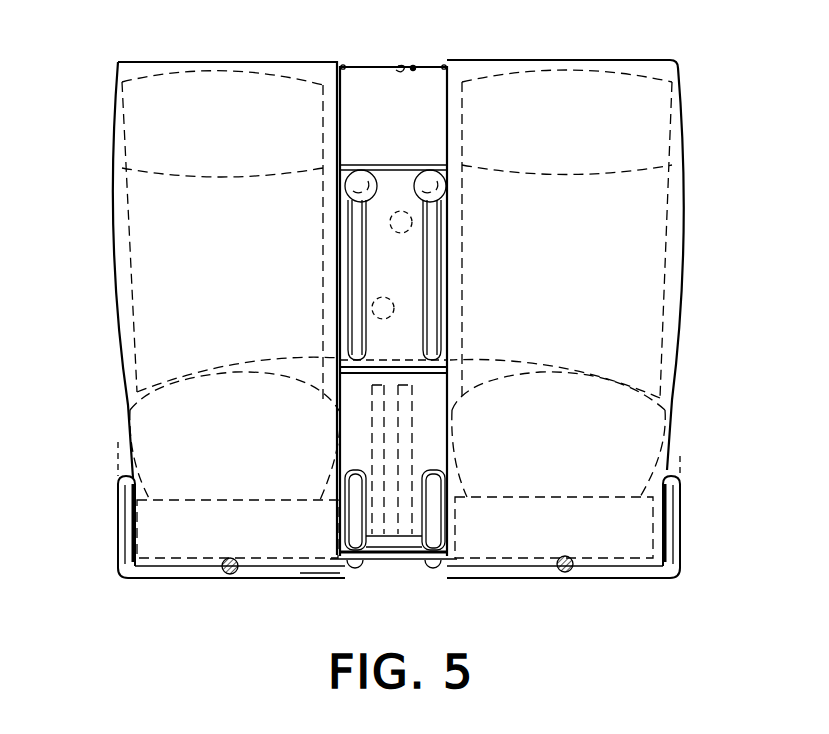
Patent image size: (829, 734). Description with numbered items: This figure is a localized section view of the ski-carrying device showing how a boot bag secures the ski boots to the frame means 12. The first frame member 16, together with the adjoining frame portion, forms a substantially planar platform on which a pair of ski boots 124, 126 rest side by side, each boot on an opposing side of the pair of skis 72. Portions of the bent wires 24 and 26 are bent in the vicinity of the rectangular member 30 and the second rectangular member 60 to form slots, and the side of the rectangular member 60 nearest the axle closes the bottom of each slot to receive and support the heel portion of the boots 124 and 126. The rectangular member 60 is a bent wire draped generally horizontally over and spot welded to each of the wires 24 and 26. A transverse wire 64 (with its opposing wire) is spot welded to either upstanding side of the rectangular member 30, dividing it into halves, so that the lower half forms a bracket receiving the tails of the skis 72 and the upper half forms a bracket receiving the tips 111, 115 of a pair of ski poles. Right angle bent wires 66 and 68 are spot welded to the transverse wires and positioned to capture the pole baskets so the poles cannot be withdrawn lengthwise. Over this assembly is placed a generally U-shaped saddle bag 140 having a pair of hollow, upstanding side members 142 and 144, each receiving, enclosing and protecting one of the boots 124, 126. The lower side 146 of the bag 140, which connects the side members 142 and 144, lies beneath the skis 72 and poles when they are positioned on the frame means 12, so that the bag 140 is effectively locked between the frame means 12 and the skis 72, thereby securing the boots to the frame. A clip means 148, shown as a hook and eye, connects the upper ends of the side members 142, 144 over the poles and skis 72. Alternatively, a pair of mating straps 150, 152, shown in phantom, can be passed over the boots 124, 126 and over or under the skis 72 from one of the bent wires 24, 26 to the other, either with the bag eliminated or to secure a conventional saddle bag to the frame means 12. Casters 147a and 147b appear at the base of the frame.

The frame means 12 is at (686, 540).
The first frame member 16 is at (116, 518).
The bent wire 24 is at (125, 537).
The bent wire 26 is at (676, 508).
The rectangular member 30 is at (386, 166).
The second rectangular member 60 is at (318, 570).
The transverse wire 64 is at (416, 358).
The right angle bent wire 66 is at (360, 280).
The right angle bent wire 68 is at (435, 268).
The pair of skis 72 is at (430, 408).
The ski pole tip 111 is at (395, 233).
The ski pole tip 115 is at (389, 319).
The ski boot 124 is at (238, 326).
The ski boot 126 is at (599, 322).
The saddle bag 140 is at (322, 56).
The upstanding side member 142 is at (116, 122).
The upstanding side member 144 is at (678, 108).
The lower side of the bag 146 is at (402, 572).
The left caster 147a is at (280, 568).
The right caster 147b is at (505, 566).
The clip means 148 is at (408, 60).
The mating strap 150 is at (118, 442).
The mating strap 152 is at (681, 456).